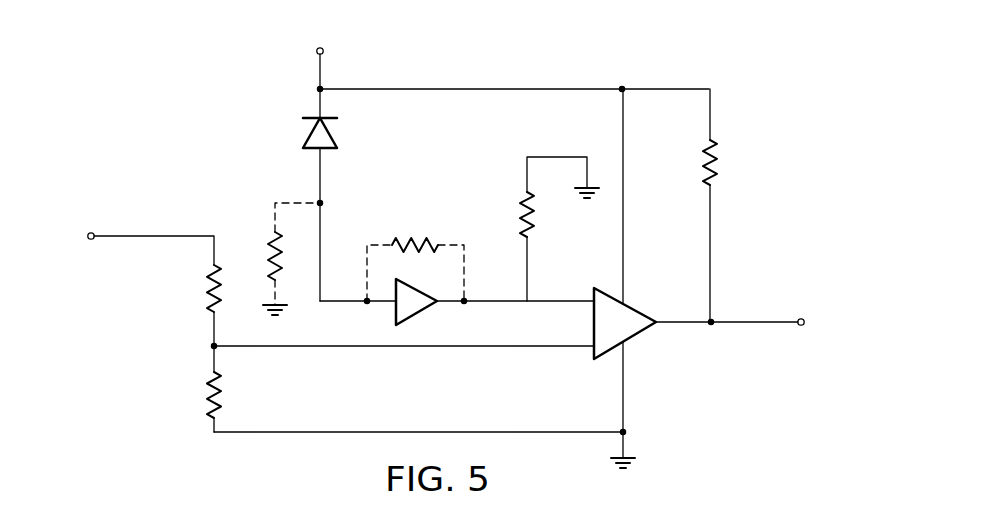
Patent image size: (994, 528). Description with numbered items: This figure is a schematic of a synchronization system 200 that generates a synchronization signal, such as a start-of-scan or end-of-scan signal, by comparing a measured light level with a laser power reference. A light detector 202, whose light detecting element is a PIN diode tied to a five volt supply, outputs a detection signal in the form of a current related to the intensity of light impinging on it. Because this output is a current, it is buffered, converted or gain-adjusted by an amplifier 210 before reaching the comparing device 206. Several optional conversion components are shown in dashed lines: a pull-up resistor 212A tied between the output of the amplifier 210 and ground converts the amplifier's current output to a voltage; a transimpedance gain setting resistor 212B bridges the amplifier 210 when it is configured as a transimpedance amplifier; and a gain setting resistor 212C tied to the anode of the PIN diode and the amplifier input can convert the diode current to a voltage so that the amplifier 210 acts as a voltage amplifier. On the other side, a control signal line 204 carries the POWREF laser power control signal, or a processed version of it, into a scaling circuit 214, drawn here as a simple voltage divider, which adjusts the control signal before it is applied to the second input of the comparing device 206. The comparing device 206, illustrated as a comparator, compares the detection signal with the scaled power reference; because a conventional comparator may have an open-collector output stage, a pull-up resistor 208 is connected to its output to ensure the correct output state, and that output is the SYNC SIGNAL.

The synchronization system 200 is at (440, 234).
The light detector 202 is at (274, 81).
The control signal line 204 is at (152, 237).
The comparing device 206 is at (669, 349).
The pull-up resistor 208 is at (773, 205).
The amplifier 210 is at (396, 312).
The pull-up resistor 212A is at (553, 157).
The transimpedance gain setting resistor 212B is at (415, 217).
The gain setting resistor 212C is at (239, 240).
The scaling circuit 214 is at (145, 348).